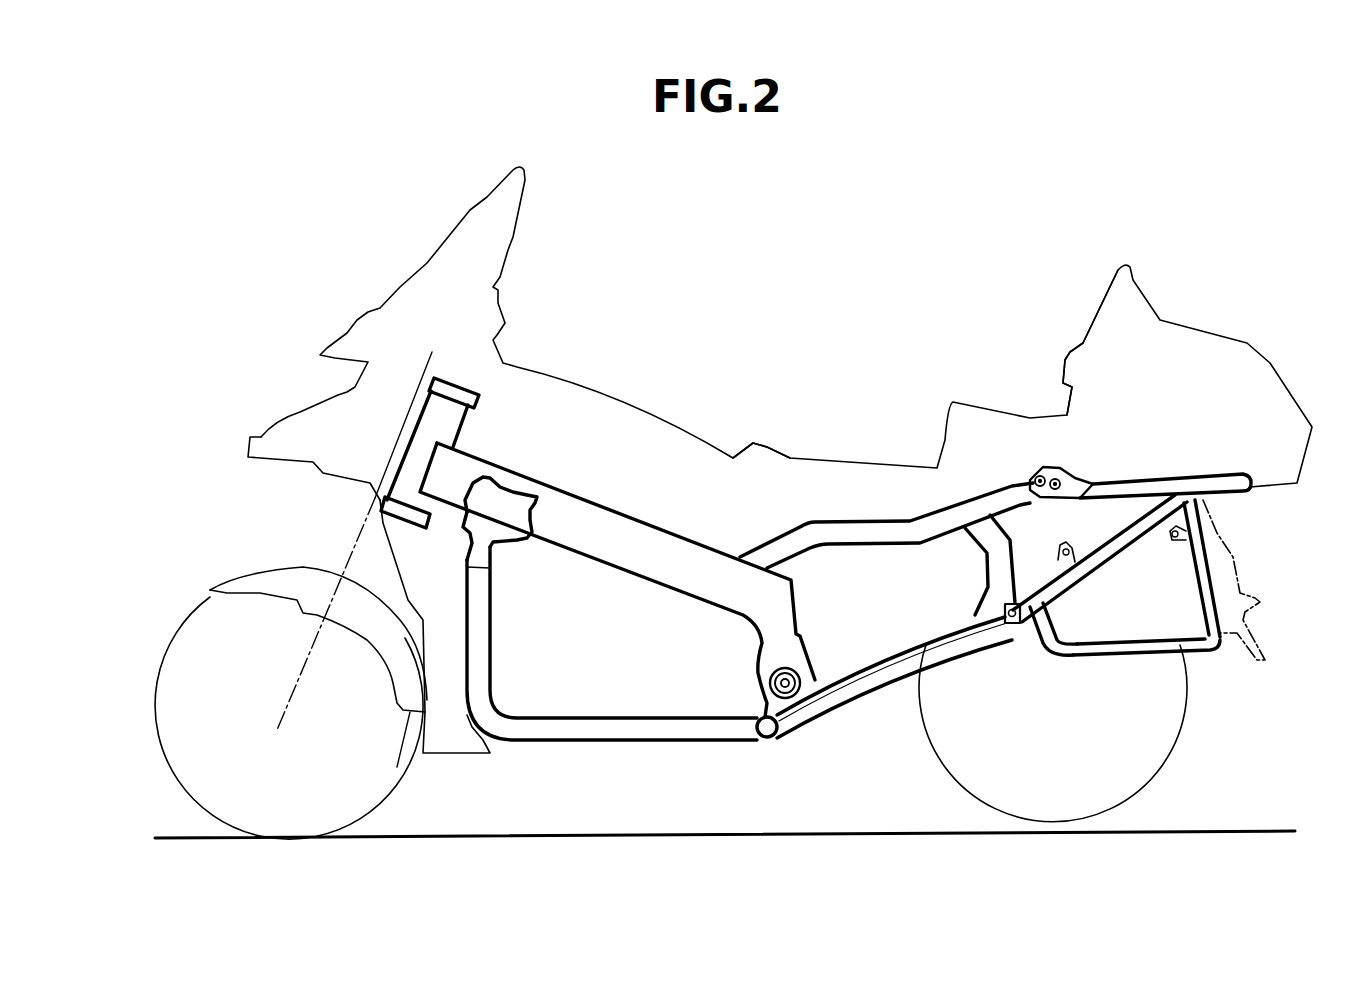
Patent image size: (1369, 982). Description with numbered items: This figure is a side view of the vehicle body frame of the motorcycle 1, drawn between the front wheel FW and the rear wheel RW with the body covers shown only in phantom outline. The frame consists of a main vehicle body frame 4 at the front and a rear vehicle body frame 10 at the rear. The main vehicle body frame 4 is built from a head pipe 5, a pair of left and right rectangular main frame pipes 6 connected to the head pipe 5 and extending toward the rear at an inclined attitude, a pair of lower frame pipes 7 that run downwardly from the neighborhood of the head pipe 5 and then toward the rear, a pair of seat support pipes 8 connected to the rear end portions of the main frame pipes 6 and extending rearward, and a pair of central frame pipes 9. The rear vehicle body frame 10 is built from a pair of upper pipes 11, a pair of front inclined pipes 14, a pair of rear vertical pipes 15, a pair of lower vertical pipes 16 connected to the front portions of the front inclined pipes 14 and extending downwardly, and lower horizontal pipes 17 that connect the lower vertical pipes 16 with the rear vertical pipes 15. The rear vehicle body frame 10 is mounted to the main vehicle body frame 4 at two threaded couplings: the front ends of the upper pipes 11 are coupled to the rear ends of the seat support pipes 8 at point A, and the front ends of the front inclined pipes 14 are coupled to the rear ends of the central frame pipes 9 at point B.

The motorcycle 1 is at (765, 320).
The main vehicle body frame 4 is at (750, 513).
The head pipe 5 is at (457, 418).
The main frame pipes 6 is at (612, 520).
The lower frame pipes 7 is at (552, 742).
The seat support pipes 8 is at (858, 533).
The central frame pipes 9 is at (865, 685).
The rear vehicle body frame 10 is at (1162, 442).
The upper pipes 11 is at (1232, 473).
The front inclined pipes 14 is at (1105, 548).
The rear vertical pipes 15 is at (1220, 603).
The lower vertical pipes 16 is at (1053, 660).
The lower horizontal pipes 17 is at (1128, 657).
The point A is at (1065, 468).
The point B is at (1010, 633).
The front wheel FW is at (400, 763).
The rear wheel RW is at (1190, 713).